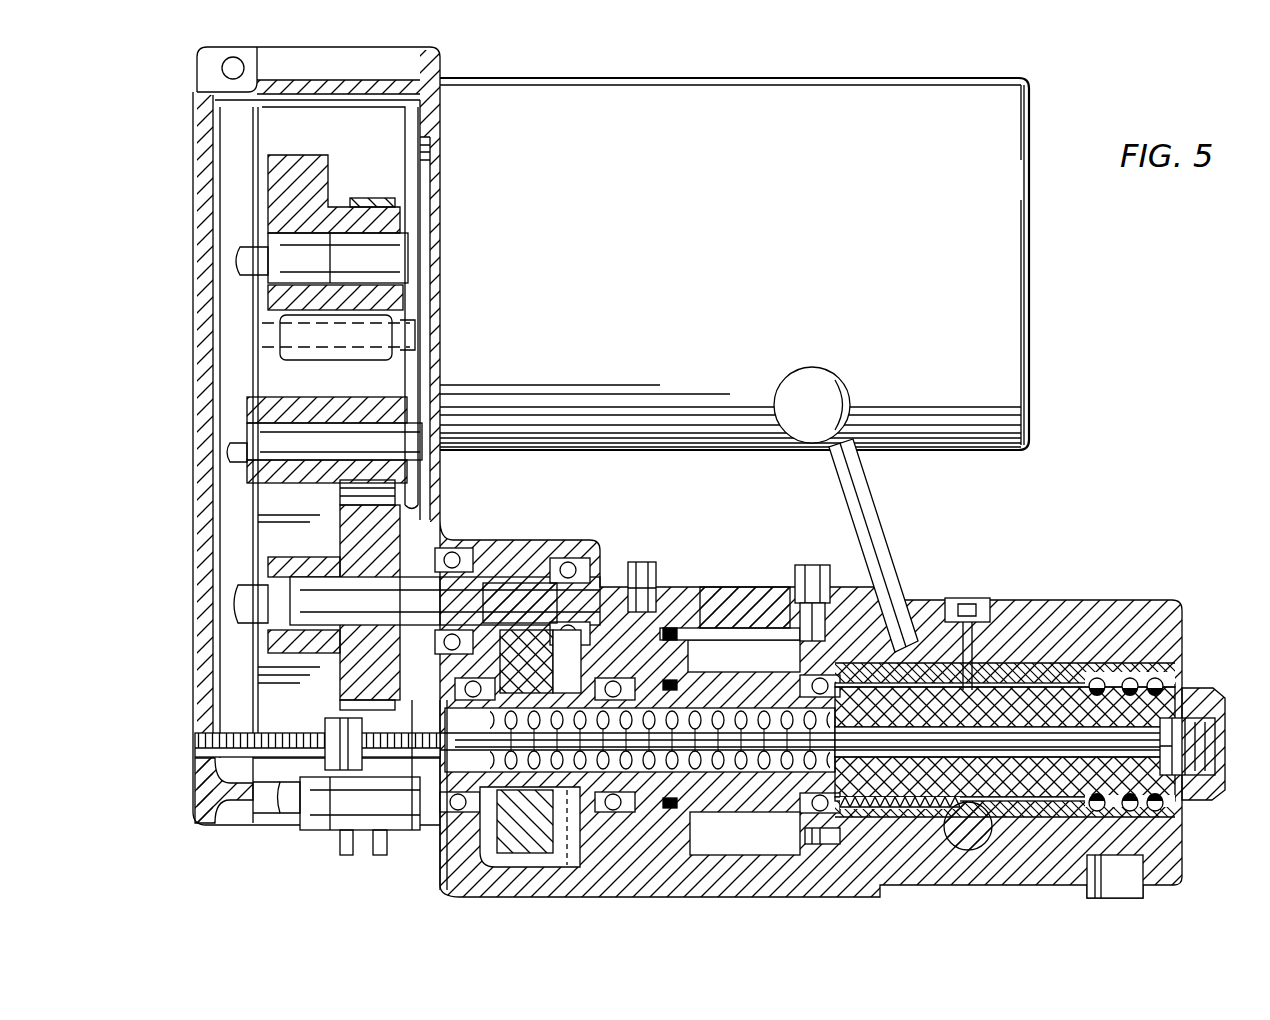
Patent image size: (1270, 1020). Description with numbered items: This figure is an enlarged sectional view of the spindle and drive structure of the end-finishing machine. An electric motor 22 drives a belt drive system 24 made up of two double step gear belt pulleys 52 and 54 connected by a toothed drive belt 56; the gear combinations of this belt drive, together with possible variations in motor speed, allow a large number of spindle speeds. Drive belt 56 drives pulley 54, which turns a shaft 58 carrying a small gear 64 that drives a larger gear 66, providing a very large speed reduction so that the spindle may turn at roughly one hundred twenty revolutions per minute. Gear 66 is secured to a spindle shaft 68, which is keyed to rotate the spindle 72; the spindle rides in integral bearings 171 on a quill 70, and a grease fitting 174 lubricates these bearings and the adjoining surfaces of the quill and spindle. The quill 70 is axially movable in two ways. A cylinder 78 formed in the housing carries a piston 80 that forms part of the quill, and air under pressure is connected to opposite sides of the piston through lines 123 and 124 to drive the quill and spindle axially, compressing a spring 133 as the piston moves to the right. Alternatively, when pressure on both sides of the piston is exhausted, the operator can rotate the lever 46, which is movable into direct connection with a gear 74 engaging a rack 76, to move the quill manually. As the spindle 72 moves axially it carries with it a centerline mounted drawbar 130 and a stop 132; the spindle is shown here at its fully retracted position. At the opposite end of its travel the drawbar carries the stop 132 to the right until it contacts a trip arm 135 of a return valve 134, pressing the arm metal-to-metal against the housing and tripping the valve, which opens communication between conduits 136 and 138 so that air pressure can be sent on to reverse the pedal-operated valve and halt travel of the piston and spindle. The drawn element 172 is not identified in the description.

The motor 22 is at (734, 264).
The belt drive system 24 is at (442, 50).
The lever 46 is at (858, 482).
The double step gear belt pulley 52 is at (330, 178).
The double step gear belt pulley 54 is at (400, 520).
The toothed drive belt 56 is at (395, 500).
The shaft 58 is at (598, 562).
The small gear 64 is at (528, 585).
The larger gear 66 is at (520, 852).
The spindle shaft 68 is at (758, 707).
The quill 70 is at (1018, 680).
The spindle 72 is at (1216, 772).
The gear 74 is at (945, 832).
The rack 76 is at (932, 822).
The cylinder 78 is at (765, 833).
The piston 80 is at (714, 607).
The line 123 is at (792, 572).
The line 124 is at (656, 565).
The drawbar 130 is at (1165, 736).
The stop 132 is at (326, 726).
The spring 133 is at (682, 710).
The return valve 134 is at (305, 818).
The arm 135 is at (412, 775).
The conduit 136 is at (343, 855).
The conduit 138 is at (383, 856).
The integral bearings 171 is at (1155, 678).
The pin 172 is at (443, 800).
The grease fitting 174 is at (967, 600).